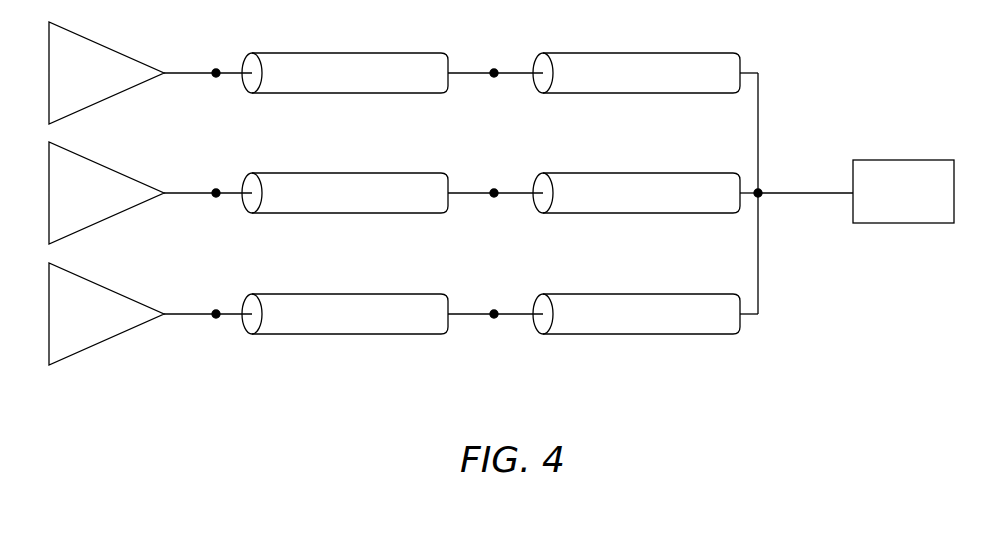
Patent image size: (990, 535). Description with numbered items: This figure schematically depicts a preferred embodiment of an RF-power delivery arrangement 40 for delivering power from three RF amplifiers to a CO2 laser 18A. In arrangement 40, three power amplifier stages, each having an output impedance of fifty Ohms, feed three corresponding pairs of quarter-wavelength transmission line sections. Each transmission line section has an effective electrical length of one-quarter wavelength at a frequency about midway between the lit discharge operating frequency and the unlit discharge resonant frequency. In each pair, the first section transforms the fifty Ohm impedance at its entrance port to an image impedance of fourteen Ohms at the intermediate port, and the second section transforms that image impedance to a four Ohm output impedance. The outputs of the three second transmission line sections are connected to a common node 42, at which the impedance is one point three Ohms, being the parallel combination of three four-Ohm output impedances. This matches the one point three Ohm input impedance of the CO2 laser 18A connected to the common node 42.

The common node 42 is at (760, 195).
The CO2 laser 18A is at (887, 223).
The RF-power delivery arrangement 40 is at (828, 373).